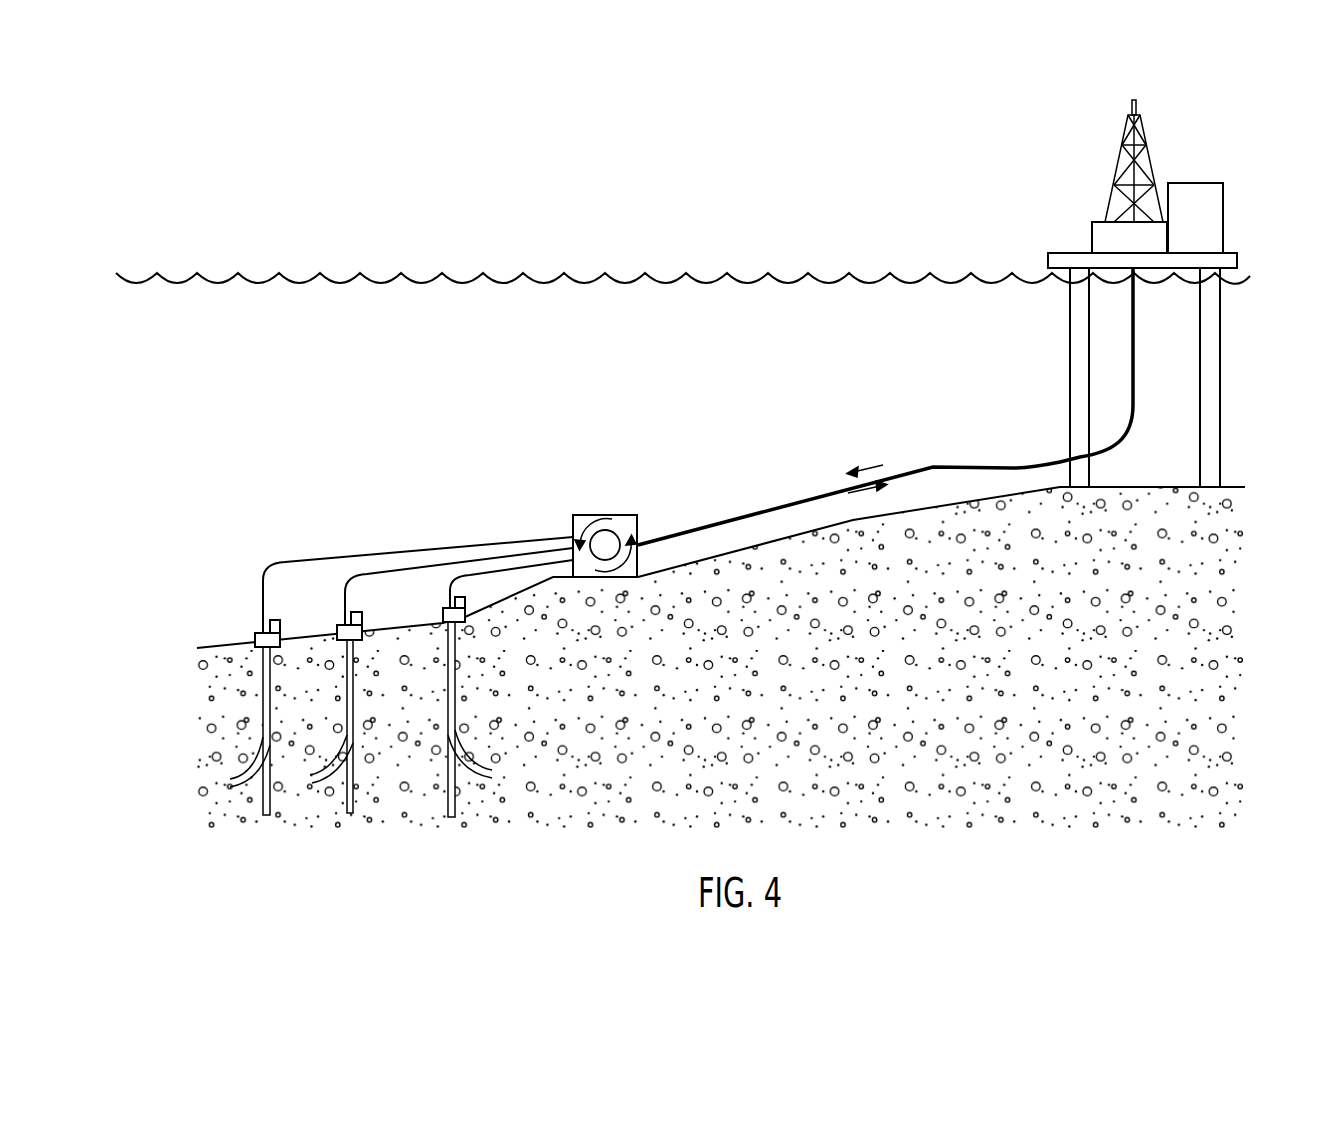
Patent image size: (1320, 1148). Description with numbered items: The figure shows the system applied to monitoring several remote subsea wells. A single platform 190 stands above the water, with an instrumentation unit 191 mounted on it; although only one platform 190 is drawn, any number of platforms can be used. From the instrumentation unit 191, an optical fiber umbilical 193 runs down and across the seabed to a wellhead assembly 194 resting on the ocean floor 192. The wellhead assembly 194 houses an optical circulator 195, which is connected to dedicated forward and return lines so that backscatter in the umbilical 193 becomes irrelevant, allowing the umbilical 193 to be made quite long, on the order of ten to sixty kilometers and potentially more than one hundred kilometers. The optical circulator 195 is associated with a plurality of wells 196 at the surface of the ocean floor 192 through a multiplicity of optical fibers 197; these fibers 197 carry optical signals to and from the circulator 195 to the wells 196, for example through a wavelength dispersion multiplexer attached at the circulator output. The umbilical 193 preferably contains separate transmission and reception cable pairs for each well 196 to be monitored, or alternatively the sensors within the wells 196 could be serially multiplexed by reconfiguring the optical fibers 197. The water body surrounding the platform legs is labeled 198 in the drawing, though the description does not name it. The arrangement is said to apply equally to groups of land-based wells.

The platform 190 is at (1147, 248).
The instrumentation unit 191 is at (1212, 230).
The ocean floor 192 is at (969, 686).
The optical fiber umbilical 193 is at (818, 490).
The wellhead assembly 194 is at (630, 515).
The optical circulator 195 is at (597, 535).
The wells 196 is at (447, 610).
The optical fibers 197 is at (478, 570).
The sea water 198 is at (938, 338).